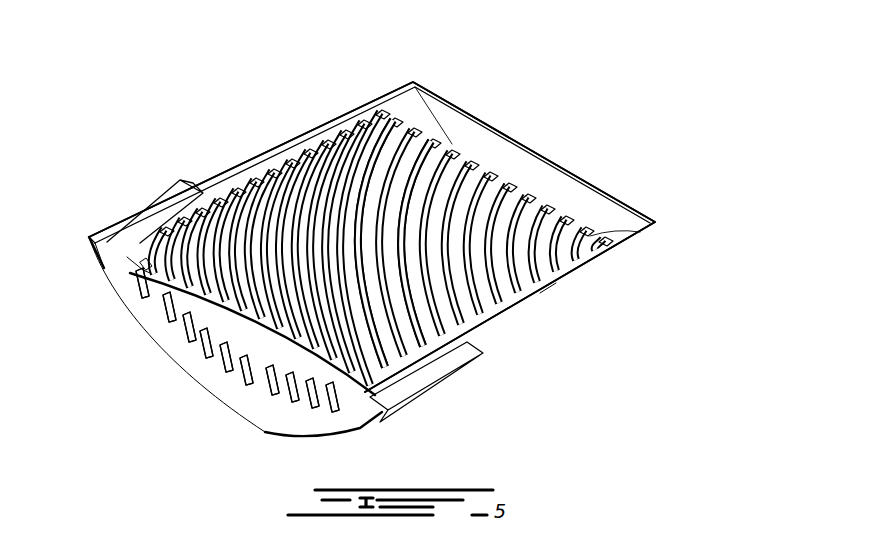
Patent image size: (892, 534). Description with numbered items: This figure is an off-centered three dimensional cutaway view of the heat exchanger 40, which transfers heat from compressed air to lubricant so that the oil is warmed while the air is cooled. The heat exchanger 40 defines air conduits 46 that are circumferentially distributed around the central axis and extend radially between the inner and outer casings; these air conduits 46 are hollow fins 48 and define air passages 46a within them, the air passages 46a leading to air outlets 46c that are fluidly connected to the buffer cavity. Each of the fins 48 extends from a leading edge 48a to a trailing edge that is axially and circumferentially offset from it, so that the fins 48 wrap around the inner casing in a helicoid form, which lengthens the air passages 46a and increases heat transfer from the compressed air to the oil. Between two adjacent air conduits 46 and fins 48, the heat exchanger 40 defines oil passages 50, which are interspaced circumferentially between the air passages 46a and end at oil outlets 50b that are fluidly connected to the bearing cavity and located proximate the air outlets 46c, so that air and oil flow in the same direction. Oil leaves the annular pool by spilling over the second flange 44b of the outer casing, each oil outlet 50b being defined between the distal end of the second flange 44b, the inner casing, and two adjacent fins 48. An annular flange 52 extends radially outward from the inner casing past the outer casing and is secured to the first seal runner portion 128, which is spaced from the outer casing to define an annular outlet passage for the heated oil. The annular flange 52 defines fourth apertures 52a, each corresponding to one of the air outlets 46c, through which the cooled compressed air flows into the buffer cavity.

The heat exchanger 40 is at (655, 108).
The second flange 44b is at (173, 227).
The air conduits 46 is at (555, 203).
The air passages 46a is at (427, 157).
The air outlets 46c is at (230, 373).
The fins 48 is at (570, 217).
The leading edge 48a is at (399, 118).
The oil passages 50 is at (553, 278).
The oil outlets 50b is at (140, 244).
The annular flange 52 is at (317, 423).
The fourth apertures 52a is at (237, 340).
The first seal runner portion 128 is at (112, 230).